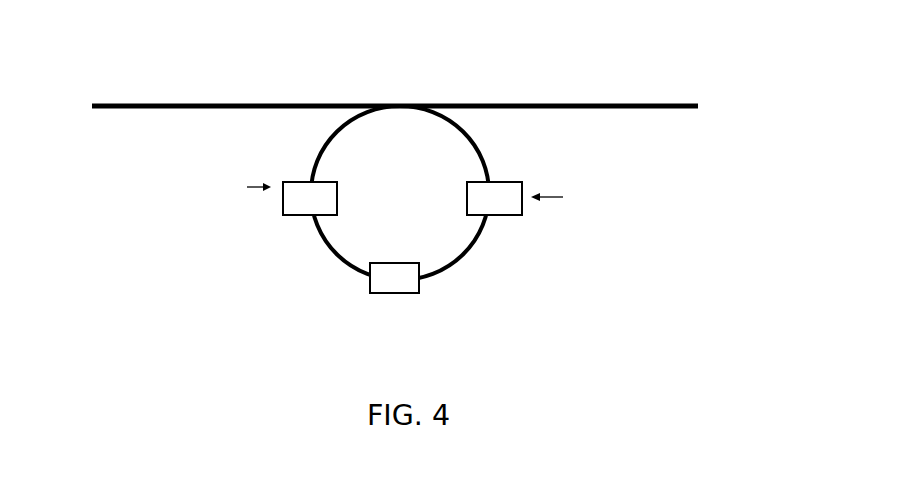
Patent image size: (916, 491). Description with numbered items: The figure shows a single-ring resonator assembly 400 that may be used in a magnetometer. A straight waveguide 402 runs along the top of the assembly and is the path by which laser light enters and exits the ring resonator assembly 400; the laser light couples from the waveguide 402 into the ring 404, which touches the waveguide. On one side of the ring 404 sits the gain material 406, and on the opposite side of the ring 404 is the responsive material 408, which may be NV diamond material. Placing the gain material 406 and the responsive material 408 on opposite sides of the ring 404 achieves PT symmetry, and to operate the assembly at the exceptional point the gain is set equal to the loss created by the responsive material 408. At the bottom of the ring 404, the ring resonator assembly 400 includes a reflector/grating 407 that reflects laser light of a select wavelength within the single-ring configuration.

The ring resonator assembly 400 is at (780, 85).
The waveguide 402 is at (198, 108).
The ring 404 is at (335, 258).
The gain material 406 is at (334, 207).
The reflector/grating 407 is at (412, 290).
The responsive material 408 is at (512, 207).